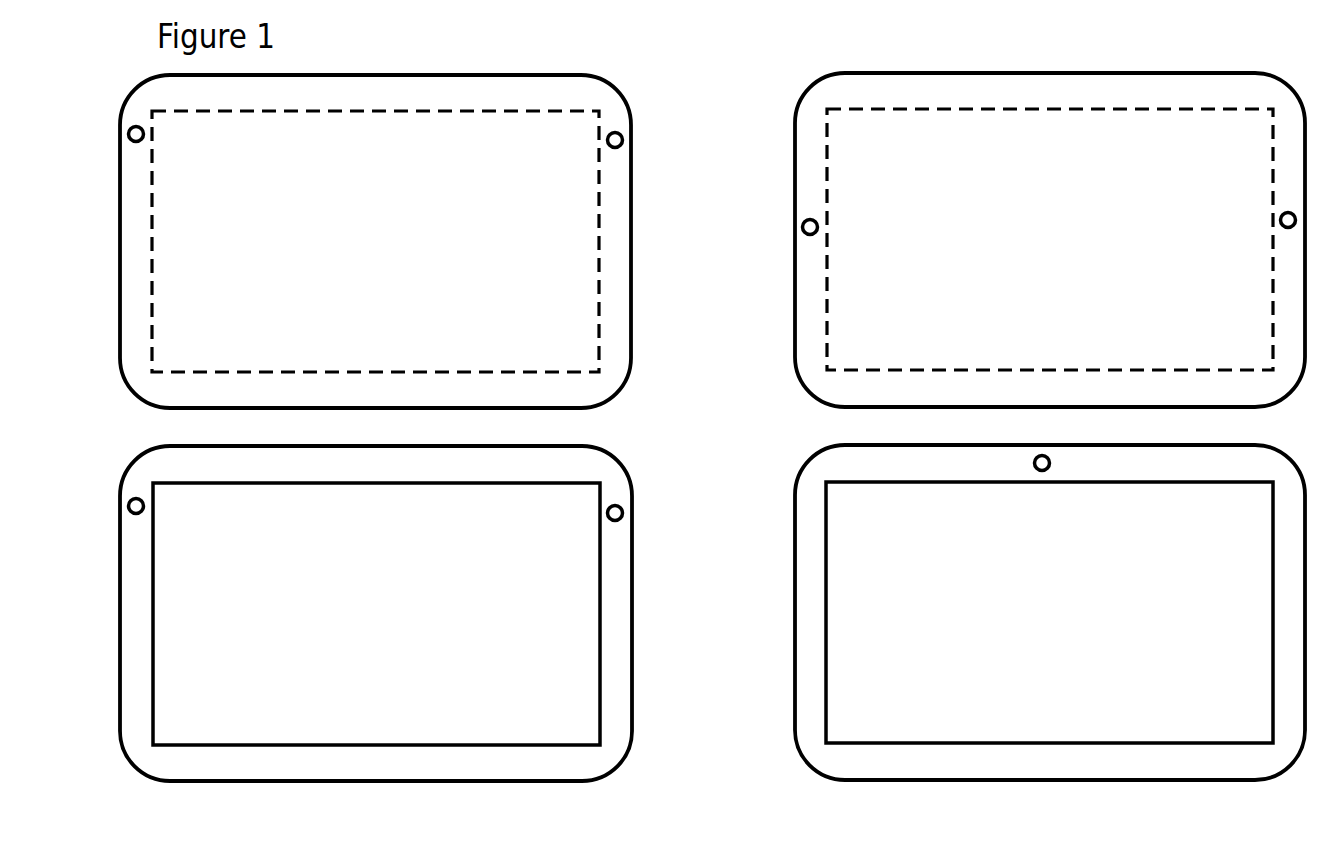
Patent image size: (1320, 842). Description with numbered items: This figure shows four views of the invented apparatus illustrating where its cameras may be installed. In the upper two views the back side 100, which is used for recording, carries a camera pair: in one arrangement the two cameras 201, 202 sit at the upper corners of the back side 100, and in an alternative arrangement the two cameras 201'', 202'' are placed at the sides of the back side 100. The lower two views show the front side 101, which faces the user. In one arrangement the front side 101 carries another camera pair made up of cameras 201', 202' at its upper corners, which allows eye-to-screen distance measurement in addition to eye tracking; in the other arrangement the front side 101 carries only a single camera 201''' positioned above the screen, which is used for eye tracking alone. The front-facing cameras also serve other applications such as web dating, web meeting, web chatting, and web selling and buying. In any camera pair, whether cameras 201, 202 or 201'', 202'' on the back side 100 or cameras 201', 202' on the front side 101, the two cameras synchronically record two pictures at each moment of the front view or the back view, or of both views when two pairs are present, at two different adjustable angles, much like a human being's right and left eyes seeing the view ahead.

The back side 100 is at (375, 241).
The front side 101 is at (712, 427).
The camera 201 is at (583, 170).
The camera 202 is at (172, 166).
The camera 201' is at (579, 542).
The camera 202' is at (177, 535).
The camera 201'' is at (1239, 252).
The camera 202'' is at (855, 263).
The single camera 201''' is at (1005, 513).